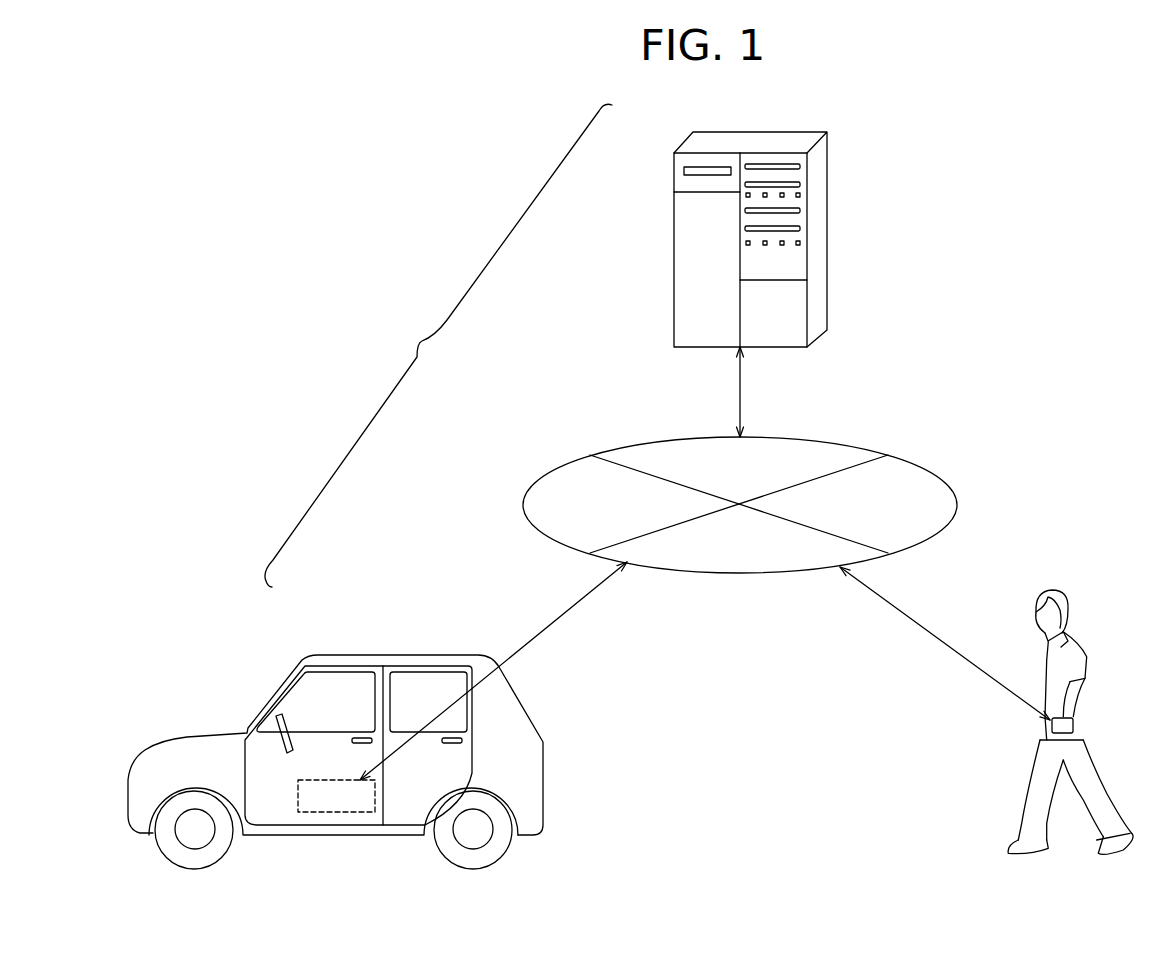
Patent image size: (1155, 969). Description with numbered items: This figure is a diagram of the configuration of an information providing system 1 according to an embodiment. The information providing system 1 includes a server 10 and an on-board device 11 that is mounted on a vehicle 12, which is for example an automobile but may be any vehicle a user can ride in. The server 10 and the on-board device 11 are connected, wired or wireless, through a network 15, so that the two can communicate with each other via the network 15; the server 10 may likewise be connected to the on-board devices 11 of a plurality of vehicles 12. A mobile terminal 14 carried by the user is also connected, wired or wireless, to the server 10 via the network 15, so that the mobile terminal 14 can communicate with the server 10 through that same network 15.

The information providing system 1 is at (438, 345).
The server 10 is at (693, 140).
The on-board device 11 is at (333, 797).
The vehicle 12 is at (192, 733).
The mobile terminal 14 is at (1075, 733).
The network 15 is at (930, 468).